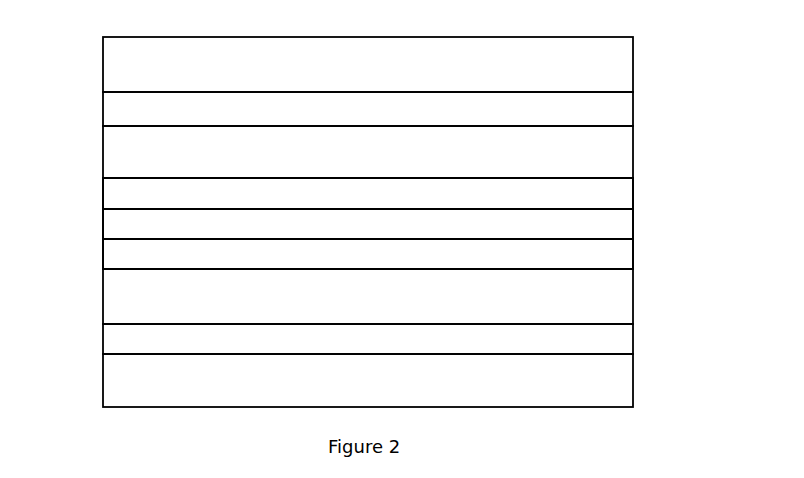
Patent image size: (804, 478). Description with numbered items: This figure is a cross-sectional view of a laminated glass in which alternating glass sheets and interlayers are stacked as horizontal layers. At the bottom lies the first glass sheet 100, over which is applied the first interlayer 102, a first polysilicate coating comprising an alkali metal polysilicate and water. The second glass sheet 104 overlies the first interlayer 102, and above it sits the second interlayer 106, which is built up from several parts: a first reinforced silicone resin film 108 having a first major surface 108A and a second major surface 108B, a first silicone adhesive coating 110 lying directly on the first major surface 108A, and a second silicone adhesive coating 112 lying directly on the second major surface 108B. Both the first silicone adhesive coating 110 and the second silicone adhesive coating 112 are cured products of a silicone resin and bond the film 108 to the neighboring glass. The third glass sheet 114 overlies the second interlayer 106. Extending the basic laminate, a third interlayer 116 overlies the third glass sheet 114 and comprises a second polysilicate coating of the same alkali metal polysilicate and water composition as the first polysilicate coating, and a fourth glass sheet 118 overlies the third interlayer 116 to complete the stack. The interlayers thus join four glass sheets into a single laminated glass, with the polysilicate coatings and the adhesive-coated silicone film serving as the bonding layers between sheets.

The first glass sheet 100 is at (619, 377).
The first interlayer 102 is at (619, 337).
The second glass sheet 104 is at (619, 293).
The second interlayer 106 is at (697, 183).
The first reinforced silicone resin film 108 is at (620, 227).
The first major surface 108A is at (118, 241).
The second major surface 108B is at (118, 207).
The first silicone adhesive coating 110 is at (620, 253).
The second silicone adhesive coating 112 is at (620, 197).
The third glass sheet 114 is at (619, 155).
The third interlayer 116 is at (619, 114).
The fourth glass sheet 118 is at (620, 73).